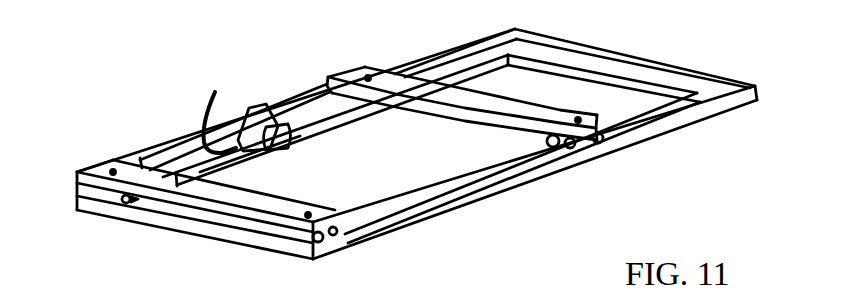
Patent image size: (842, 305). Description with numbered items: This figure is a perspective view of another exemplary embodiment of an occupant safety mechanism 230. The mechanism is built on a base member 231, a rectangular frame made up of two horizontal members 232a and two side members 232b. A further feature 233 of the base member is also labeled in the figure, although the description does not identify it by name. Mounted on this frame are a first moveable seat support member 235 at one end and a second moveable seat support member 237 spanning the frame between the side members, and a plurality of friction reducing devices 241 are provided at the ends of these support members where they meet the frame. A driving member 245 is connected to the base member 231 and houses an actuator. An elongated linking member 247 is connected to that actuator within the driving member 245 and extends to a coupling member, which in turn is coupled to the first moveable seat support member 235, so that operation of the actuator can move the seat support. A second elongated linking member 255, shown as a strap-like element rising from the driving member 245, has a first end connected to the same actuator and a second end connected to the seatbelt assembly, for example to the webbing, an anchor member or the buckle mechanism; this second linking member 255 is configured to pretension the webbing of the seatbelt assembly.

The occupant safety mechanism 230 is at (548, 201).
The base member 231 is at (593, 53).
The horizontal members 232a is at (667, 75).
The side members 232b is at (412, 63).
The channel 233 is at (412, 73).
The first moveable seat support member 235 is at (100, 165).
The second moveable seat support member 237 is at (507, 114).
The friction reducing devices 241 is at (319, 66).
The driving member 245 is at (310, 125).
The elongated linking member 247 is at (212, 166).
The second elongated linking member 255 is at (207, 112).